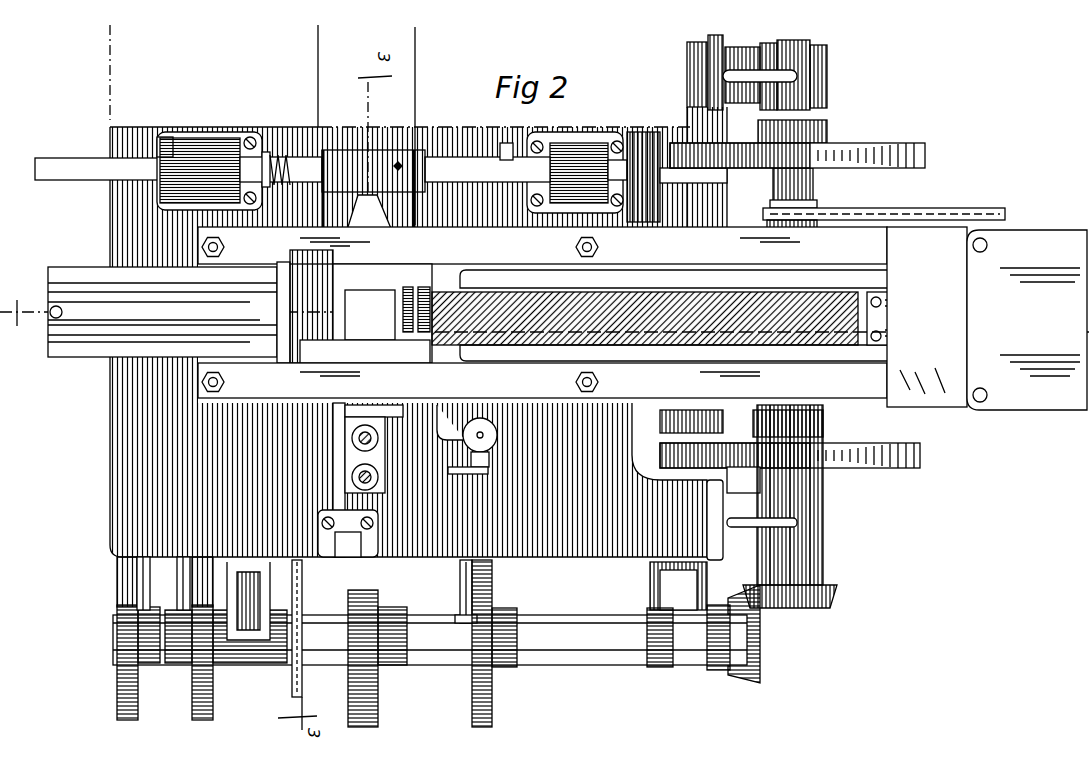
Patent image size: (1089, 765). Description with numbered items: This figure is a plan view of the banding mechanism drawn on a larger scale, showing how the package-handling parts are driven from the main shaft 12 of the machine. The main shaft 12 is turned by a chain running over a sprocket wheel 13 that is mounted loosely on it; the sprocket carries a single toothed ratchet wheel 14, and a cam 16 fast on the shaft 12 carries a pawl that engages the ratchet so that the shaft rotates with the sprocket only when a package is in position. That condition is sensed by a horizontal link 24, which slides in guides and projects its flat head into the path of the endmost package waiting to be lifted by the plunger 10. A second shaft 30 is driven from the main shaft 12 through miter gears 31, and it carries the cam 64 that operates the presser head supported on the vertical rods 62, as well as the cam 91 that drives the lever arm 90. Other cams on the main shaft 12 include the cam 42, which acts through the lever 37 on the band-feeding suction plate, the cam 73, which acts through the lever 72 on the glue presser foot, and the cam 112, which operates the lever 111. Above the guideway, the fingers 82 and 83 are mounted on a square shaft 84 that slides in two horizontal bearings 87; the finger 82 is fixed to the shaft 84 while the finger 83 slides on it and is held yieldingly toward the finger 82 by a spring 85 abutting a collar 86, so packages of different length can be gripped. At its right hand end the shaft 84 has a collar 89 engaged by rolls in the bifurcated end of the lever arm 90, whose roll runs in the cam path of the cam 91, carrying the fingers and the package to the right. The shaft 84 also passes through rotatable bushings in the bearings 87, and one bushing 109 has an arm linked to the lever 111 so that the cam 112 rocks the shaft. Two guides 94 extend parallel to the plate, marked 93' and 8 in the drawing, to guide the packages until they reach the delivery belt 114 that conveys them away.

The work spindle axis 8 is at (762, 335).
The plunger 10 is at (365, 326).
The main shaft 12 is at (574, 645).
The sprocket wheel 13 is at (292, 690).
The ratchet wheel 14 is at (358, 690).
The cam 16 is at (365, 722).
The horizontal link 24 is at (348, 477).
The shaft 30 is at (810, 190).
The miter gears 31 is at (786, 604).
The lever 37 is at (216, 560).
The cam 42 is at (203, 718).
The vertical rods 62 is at (372, 477).
The cam 64 is at (874, 466).
The lever 72 is at (460, 578).
The cam 73 is at (474, 703).
The finger 82 is at (428, 300).
The finger 83 is at (300, 268).
The square shaft 84 is at (452, 165).
The spring 85 is at (283, 153).
The collar 86 is at (266, 150).
The bearings 87 is at (190, 145).
The collar 89 is at (630, 140).
The lever arm 90 is at (682, 183).
The cam 91 is at (856, 156).
The bar 93' is at (645, 308).
The guides 94 is at (730, 345).
The bushing 109 is at (166, 140).
The lever 111 is at (138, 572).
The cam 112 is at (116, 690).
The delivery belt 114 is at (1052, 293).